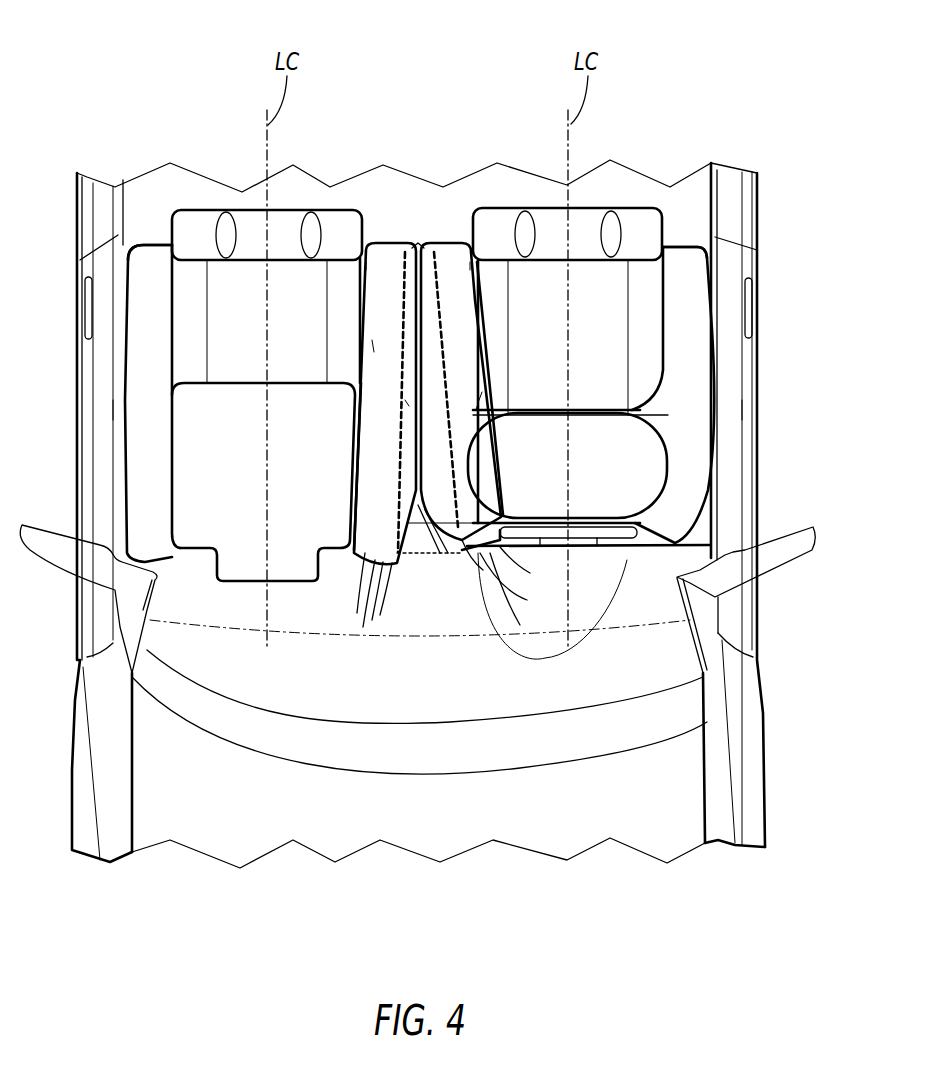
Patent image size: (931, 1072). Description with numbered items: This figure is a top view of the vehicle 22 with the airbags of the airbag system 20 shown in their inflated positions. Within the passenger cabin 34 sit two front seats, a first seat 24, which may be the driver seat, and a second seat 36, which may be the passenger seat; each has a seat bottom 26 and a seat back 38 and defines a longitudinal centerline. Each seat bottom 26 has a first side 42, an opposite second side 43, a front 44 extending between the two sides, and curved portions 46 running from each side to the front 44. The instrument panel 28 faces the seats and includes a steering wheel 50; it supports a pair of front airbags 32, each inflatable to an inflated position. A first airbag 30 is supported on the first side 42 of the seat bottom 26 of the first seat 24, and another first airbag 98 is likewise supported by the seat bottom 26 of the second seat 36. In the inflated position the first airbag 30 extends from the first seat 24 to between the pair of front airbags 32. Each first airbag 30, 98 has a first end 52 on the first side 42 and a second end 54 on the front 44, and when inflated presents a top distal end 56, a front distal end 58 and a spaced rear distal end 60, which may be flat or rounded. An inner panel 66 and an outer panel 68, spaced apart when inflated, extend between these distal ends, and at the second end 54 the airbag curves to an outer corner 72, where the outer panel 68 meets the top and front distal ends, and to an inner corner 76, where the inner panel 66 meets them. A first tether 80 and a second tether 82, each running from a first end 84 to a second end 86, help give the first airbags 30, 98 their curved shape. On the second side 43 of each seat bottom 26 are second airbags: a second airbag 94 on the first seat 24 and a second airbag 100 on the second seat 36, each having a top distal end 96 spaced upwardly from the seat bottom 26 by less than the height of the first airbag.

The airbag system 20 is at (176, 66).
The vehicle 22 is at (685, 785).
The first seat 24 is at (552, 290).
The seat bottom 26 is at (192, 327).
The instrument panel 28 is at (420, 627).
The first airbag 30 is at (450, 302).
The front airbags 32 is at (203, 490).
The passenger cabin 34 is at (418, 522).
The second seat 36 is at (282, 290).
The seat back 38 is at (198, 225).
The first side 42 is at (343, 278).
The second side 43 is at (190, 283).
The front 44 is at (605, 408).
The curved portions 46 is at (497, 412).
The steering wheel 50 is at (623, 532).
The first end 52 is at (375, 267).
The second end 54 is at (363, 590).
The top distal end 56 is at (374, 405).
The front distal end 58 is at (370, 590).
The rear distal end 60 is at (445, 248).
The inner panel 66 is at (476, 407).
The outer panel 68 is at (438, 533).
The outer corner 72 is at (397, 565).
The inner corner 76 is at (512, 515).
The first tether 80 is at (407, 403).
The second tether 82 is at (352, 437).
The first end 84 is at (353, 548).
The second end 86 is at (366, 262).
The second airbag 94 is at (690, 387).
The top distal end 96 is at (139, 420).
The first airbag 98 is at (380, 345).
The second airbag 100 is at (152, 375).